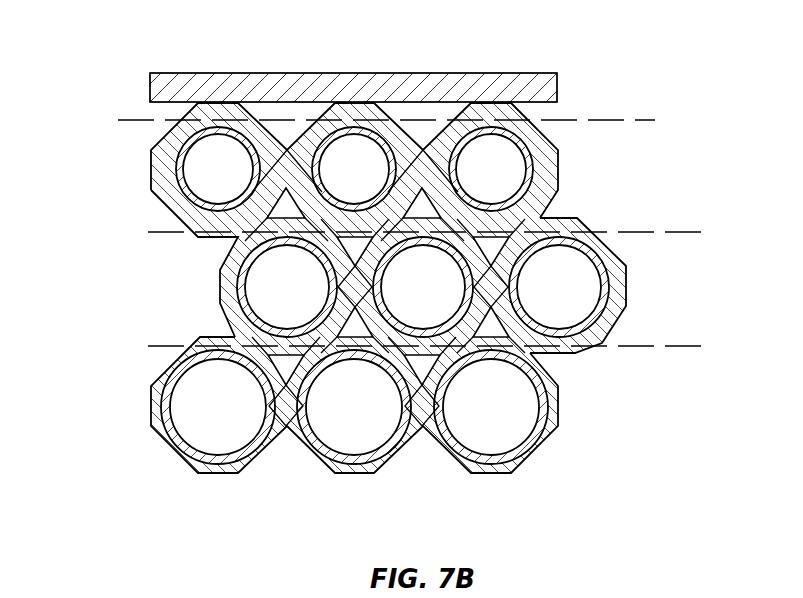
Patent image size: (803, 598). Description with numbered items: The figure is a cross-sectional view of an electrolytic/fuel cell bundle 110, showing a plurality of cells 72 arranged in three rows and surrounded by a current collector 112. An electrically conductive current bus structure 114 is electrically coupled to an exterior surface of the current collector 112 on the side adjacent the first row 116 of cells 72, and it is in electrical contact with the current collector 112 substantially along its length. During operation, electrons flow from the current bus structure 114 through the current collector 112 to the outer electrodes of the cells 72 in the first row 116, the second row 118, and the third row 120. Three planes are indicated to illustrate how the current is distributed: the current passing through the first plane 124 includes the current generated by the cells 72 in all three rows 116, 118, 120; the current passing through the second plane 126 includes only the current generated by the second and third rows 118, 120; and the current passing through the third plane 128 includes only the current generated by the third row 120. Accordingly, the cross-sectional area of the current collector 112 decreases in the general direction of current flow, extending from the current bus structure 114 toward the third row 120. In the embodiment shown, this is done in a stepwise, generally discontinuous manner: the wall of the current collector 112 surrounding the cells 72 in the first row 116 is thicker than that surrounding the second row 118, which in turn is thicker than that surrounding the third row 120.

The electrolytic/fuel cell bundle 110 is at (391, 267).
The current collector 112 is at (352, 105).
The current bus structure 114 is at (220, 85).
The first row 116 is at (133, 180).
The second row 118 is at (197, 286).
The third row 120 is at (133, 406).
The first plane 124 is at (630, 113).
The second plane 126 is at (696, 231).
The third plane 128 is at (692, 353).
The cells 72 is at (523, 162).